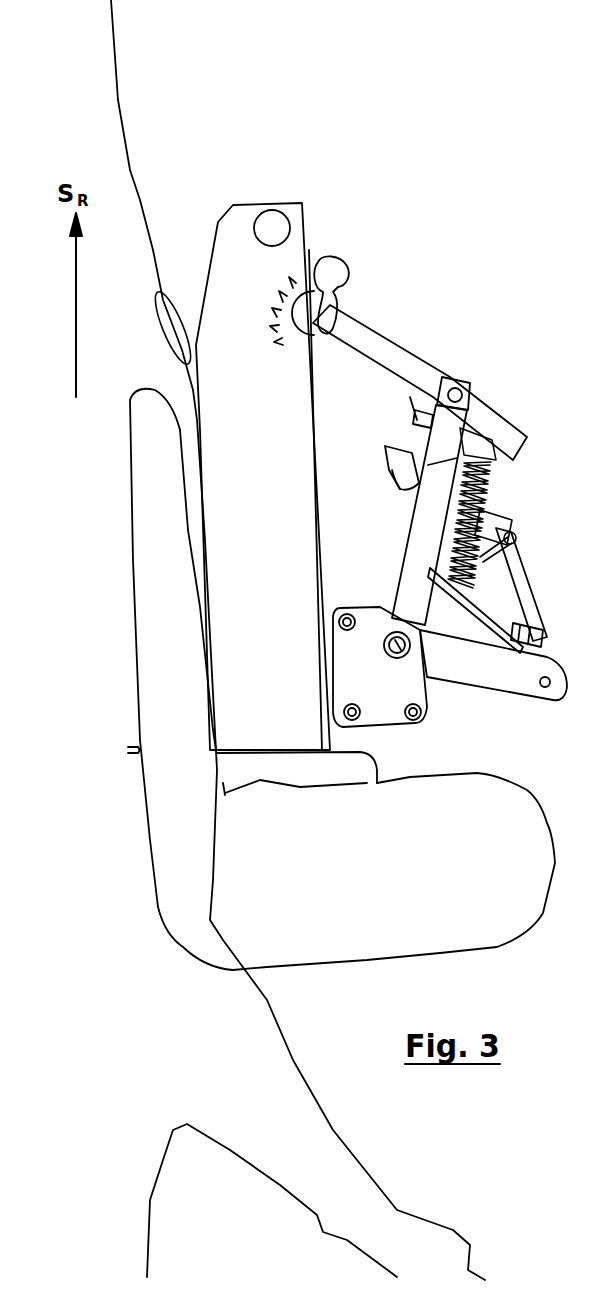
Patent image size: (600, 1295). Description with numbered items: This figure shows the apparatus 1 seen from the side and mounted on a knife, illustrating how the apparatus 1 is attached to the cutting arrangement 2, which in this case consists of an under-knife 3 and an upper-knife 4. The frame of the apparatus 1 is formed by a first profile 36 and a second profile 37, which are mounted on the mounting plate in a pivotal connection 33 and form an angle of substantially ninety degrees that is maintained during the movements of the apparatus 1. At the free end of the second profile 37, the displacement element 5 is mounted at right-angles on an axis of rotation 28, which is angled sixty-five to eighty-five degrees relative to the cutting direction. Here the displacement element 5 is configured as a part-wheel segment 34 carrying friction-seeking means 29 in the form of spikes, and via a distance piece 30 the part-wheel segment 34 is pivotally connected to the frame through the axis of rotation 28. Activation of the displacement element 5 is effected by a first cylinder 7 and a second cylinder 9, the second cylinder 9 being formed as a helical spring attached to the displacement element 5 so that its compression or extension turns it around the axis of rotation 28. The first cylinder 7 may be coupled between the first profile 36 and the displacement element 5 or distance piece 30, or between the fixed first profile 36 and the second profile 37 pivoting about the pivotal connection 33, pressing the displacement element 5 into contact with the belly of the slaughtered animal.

The apparatus 1 is at (480, 325).
The cutting arrangement 2 is at (181, 262).
The under-knife 3 is at (158, 672).
The upper-knife 4 is at (233, 230).
The displacement element 5 is at (420, 361).
The first cylinder 7 is at (517, 537).
The second cylinder 9 is at (493, 492).
The axis of rotation 28 is at (460, 393).
The friction-seeking means 29 is at (323, 248).
The distance piece 30 is at (385, 360).
The pivotal connection 33 is at (436, 670).
The part-wheel segment 34 is at (350, 268).
The first profile 36 is at (380, 765).
The second profile 37 is at (413, 577).